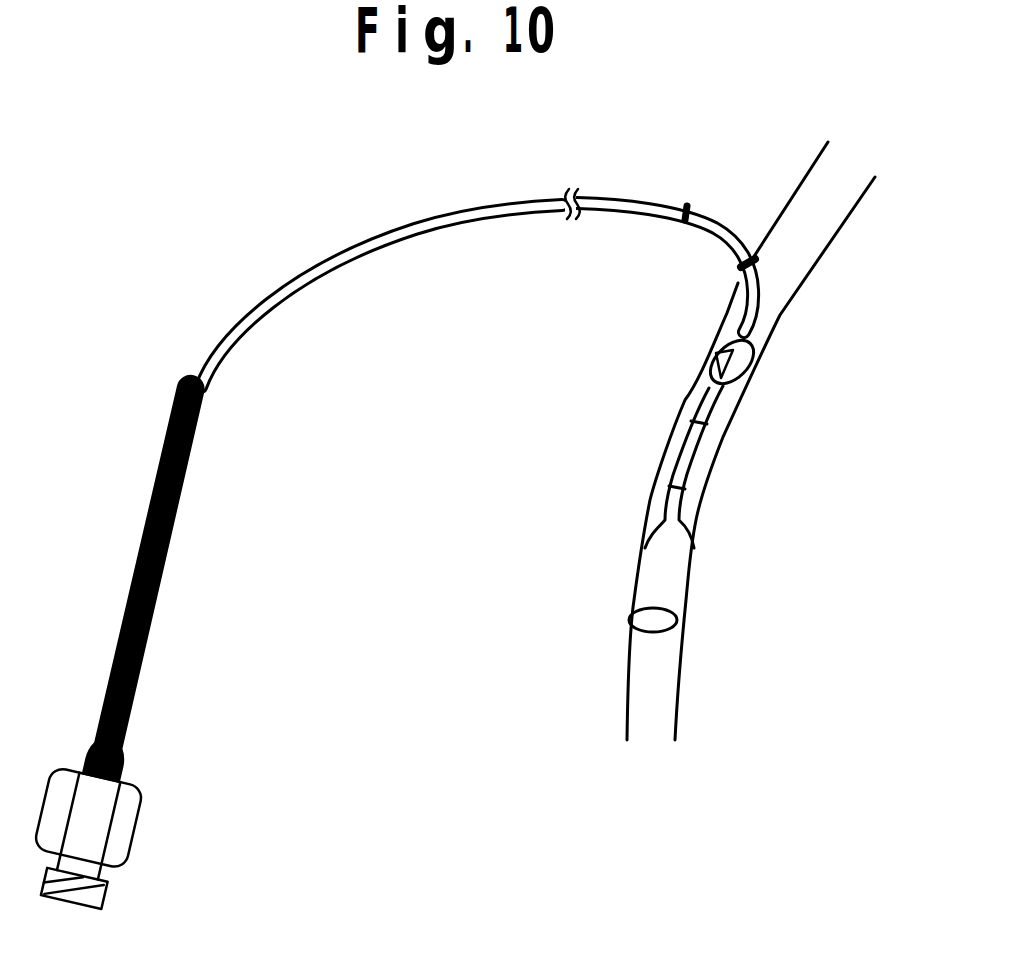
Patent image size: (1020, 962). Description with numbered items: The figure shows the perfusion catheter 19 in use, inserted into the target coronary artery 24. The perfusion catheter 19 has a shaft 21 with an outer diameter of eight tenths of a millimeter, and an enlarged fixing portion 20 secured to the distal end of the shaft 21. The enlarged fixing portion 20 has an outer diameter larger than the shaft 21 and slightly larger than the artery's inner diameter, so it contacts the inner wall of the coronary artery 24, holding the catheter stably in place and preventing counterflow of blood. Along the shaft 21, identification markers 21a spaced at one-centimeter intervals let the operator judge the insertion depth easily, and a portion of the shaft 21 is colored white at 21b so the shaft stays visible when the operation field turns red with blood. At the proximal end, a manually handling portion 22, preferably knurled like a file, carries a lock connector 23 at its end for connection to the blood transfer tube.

The perfusion catheter 19 is at (427, 526).
The enlarged fixing portion 20 is at (665, 588).
The shaft 21 is at (481, 248).
The identification markers 21a is at (679, 207).
The white-colored portion of shaft 21b is at (690, 460).
The manually handling portion 22 is at (155, 608).
The lock connector 23 is at (103, 890).
The target coronary artery 24 is at (778, 314).